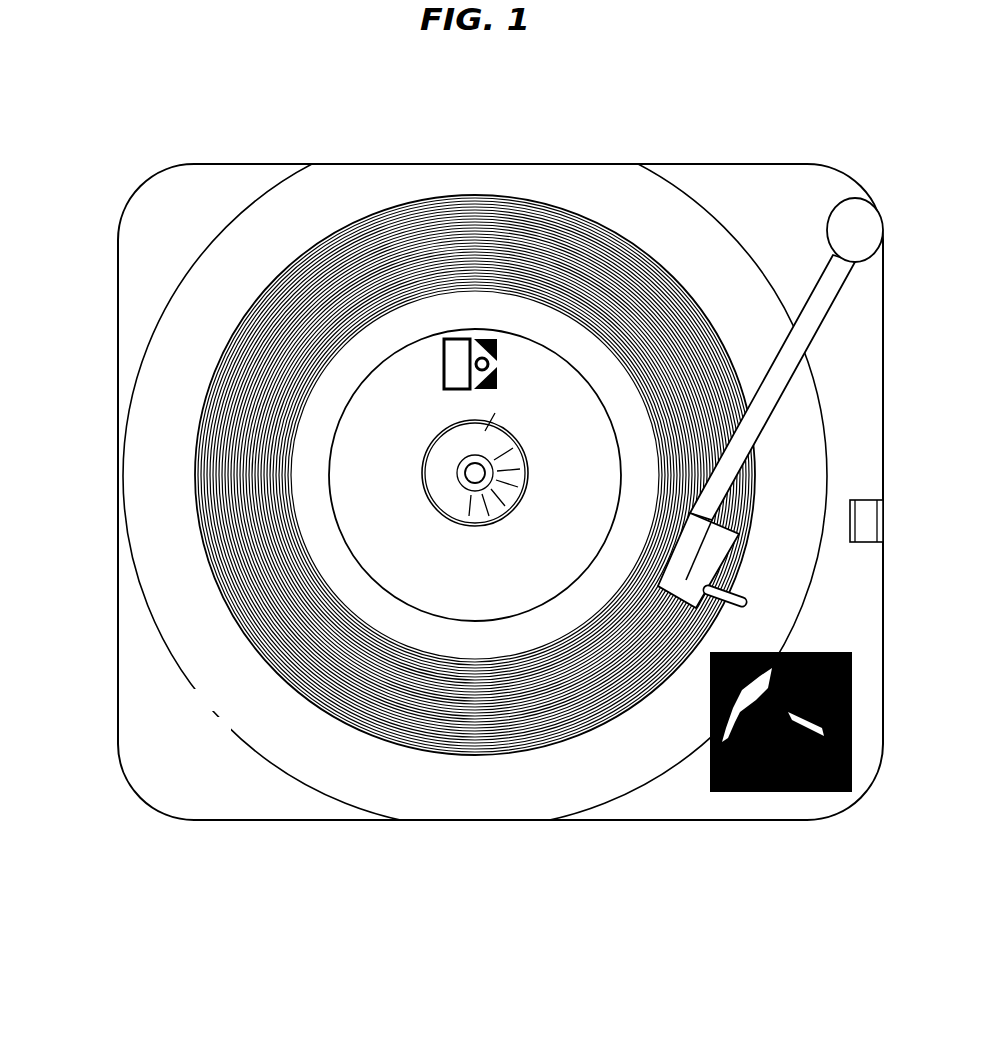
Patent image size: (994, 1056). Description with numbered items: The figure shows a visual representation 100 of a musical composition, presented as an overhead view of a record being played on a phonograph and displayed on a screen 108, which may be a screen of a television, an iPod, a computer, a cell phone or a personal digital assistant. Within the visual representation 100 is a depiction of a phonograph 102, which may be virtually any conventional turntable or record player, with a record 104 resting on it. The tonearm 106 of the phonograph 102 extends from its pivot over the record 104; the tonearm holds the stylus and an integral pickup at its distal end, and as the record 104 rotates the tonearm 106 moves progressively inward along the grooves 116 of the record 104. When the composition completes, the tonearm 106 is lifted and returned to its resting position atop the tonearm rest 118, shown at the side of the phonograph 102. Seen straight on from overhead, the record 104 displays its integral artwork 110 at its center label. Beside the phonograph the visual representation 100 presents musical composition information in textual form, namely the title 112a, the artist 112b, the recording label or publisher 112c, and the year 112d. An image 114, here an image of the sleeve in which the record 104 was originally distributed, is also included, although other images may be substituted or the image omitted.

The visual representation 100 is at (150, 122).
The phonograph 102 is at (858, 365).
The record 104 is at (468, 640).
The tonearm 106 is at (808, 293).
The screen 108 is at (852, 197).
The integral artwork 110 is at (417, 393).
The title 112a is at (143, 700).
The artist 112b is at (143, 728).
The recording label or publisher 112c is at (143, 757).
The year 112d is at (143, 785).
The image 114 is at (853, 699).
The grooves 116 is at (320, 303).
The tonearm rest 118 is at (863, 508).